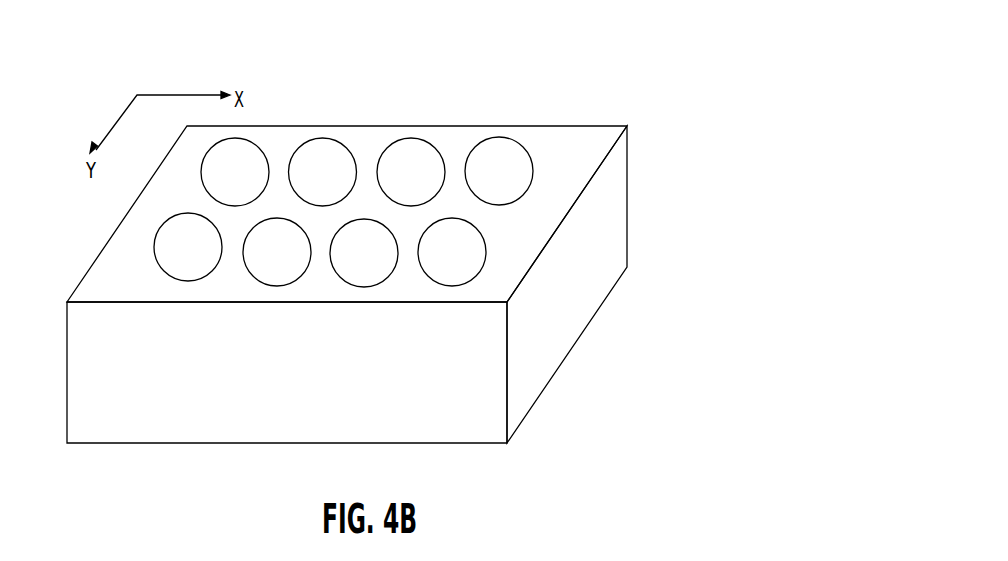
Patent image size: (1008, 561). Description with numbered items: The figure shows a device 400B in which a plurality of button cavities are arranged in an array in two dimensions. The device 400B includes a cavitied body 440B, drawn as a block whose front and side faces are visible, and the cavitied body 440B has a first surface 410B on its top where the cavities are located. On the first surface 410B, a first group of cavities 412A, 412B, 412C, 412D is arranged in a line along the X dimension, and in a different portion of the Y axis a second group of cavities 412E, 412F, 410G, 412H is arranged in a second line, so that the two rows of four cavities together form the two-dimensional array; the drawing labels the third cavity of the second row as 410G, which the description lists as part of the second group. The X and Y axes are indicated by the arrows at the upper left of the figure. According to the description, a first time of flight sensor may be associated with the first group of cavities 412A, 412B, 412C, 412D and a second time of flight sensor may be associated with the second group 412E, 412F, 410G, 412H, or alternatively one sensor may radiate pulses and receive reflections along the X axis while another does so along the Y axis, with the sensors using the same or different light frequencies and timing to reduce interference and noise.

The device 400B is at (399, 239).
The first surface 410B is at (148, 289).
The cavity 412A is at (258, 184).
The cavity 412B is at (345, 184).
The cavity 412C is at (434, 184).
The cavity 412D is at (522, 182).
The cavity 412E is at (210, 258).
The cavity 412F is at (300, 264).
The opening 410G is at (386, 264).
The cavity 412H is at (474, 264).
The cavitied body 440B is at (549, 383).